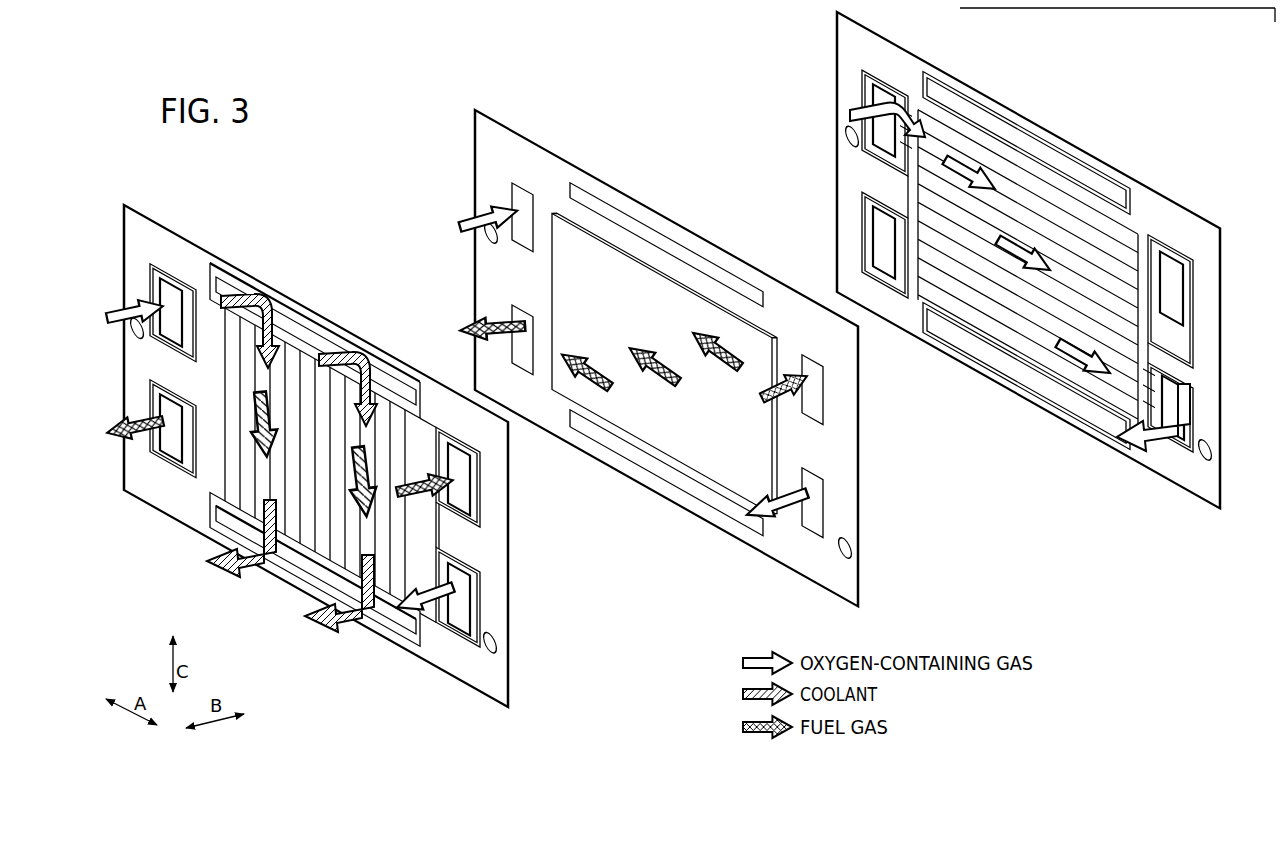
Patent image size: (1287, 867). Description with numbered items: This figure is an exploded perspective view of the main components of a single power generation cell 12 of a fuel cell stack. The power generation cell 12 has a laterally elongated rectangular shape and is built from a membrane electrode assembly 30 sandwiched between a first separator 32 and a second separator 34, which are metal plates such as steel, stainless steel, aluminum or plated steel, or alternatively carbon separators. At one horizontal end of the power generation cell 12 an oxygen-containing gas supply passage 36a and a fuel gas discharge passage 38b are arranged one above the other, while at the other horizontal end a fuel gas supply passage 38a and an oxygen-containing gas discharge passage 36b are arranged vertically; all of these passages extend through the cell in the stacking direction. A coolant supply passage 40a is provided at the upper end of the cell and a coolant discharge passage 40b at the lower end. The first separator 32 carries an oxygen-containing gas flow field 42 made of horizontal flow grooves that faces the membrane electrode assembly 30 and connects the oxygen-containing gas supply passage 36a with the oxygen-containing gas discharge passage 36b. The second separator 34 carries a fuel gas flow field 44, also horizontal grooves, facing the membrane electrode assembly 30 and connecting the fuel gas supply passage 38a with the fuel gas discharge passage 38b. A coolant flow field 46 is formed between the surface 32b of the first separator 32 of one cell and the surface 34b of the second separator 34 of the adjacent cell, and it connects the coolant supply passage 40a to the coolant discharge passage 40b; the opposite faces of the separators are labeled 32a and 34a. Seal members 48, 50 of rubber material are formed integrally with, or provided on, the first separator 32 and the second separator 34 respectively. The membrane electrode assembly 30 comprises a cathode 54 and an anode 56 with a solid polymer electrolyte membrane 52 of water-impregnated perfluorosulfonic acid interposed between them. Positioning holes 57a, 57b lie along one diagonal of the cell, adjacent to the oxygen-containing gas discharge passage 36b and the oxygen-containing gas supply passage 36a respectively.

The power generation cell 12 is at (320, 172).
The membrane electrode assembly 30 is at (473, 138).
The first separator 32 is at (833, 40).
The second separator 34 is at (122, 231).
The oxygen-containing gas supply passage 36a is at (162, 290).
The oxygen-containing gas discharge passage 36b is at (462, 606).
The fuel gas supply passage 38a is at (462, 470).
The fuel gas discharge passage 38b is at (160, 408).
The coolant supply passage 40a is at (228, 290).
The coolant discharge passage 40b is at (288, 550).
The oxygen-containing gas flow field 42 is at (975, 305).
The fuel gas flow field 44 is at (306, 363).
The coolant flow field 46 is at (240, 463).
The seal member 48 is at (963, 90).
The seal member 50 is at (288, 303).
The solid polymer electrolyte membrane 52 is at (826, 568).
The cathode 54 is at (637, 278).
The anode 56 is at (587, 250).
The positioning hole 57a is at (498, 647).
The positioning hole 57b is at (140, 333).
The surface of first separator 32a is at (1158, 448).
The surface of the first separator 32b is at (1198, 472).
The surface of second separator 34a is at (490, 670).
The surface of the second separator 34b is at (444, 646).